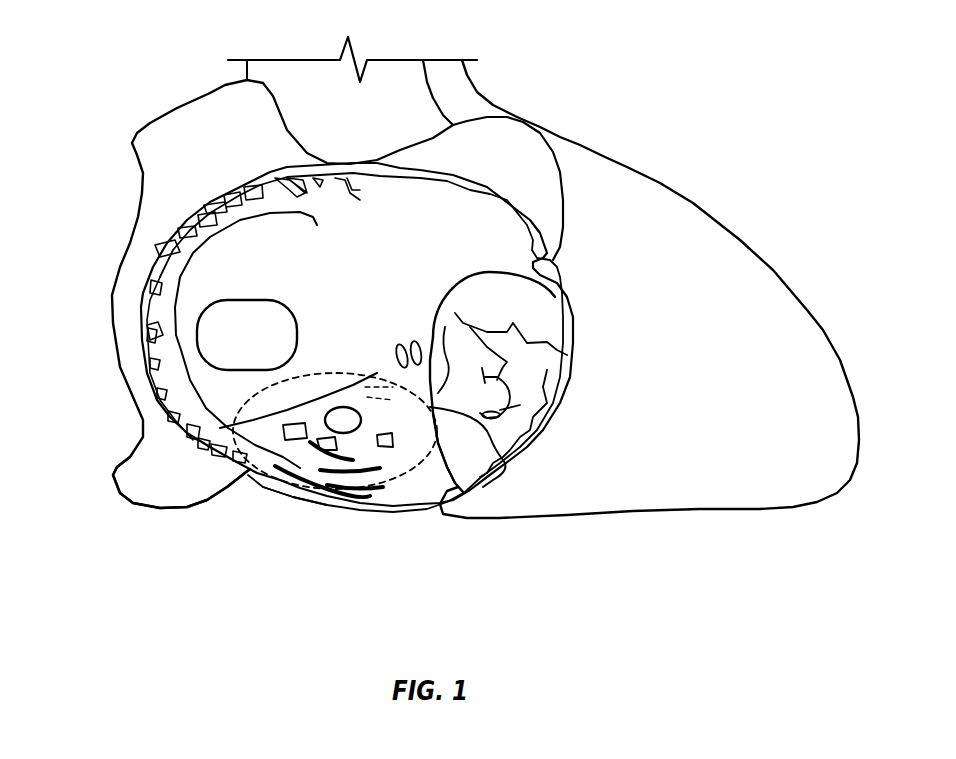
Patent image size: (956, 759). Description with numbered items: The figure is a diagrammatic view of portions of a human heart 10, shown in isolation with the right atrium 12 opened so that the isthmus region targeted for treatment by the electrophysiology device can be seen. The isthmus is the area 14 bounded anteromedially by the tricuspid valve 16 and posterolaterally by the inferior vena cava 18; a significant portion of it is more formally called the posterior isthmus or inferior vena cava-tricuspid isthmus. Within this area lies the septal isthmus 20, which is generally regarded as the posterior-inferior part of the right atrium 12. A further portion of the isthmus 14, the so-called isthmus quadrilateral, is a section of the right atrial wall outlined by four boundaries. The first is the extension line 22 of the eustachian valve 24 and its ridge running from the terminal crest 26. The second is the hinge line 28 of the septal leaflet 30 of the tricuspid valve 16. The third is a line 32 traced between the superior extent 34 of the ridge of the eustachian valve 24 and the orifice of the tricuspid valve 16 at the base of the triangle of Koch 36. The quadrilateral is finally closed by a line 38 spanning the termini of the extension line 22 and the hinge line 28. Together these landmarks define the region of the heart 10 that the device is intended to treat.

The heart 10 is at (651, 109).
The right atrium 12 is at (200, 313).
The isthmus region 14 is at (442, 455).
The tricuspid valve 16 is at (505, 460).
The inferior vena cava 18 is at (178, 466).
The septal isthmus 20 is at (420, 446).
The extension line 22 is at (277, 427).
The eustachian valve 24 is at (290, 480).
The terminal crest 26 is at (172, 328).
The hinge line 28 is at (472, 440).
The septal leaflet 30 is at (487, 377).
The line 32 is at (378, 370).
The superior extent 34 is at (343, 405).
The triangle of Koch 36 is at (450, 352).
The line 38 is at (352, 418).